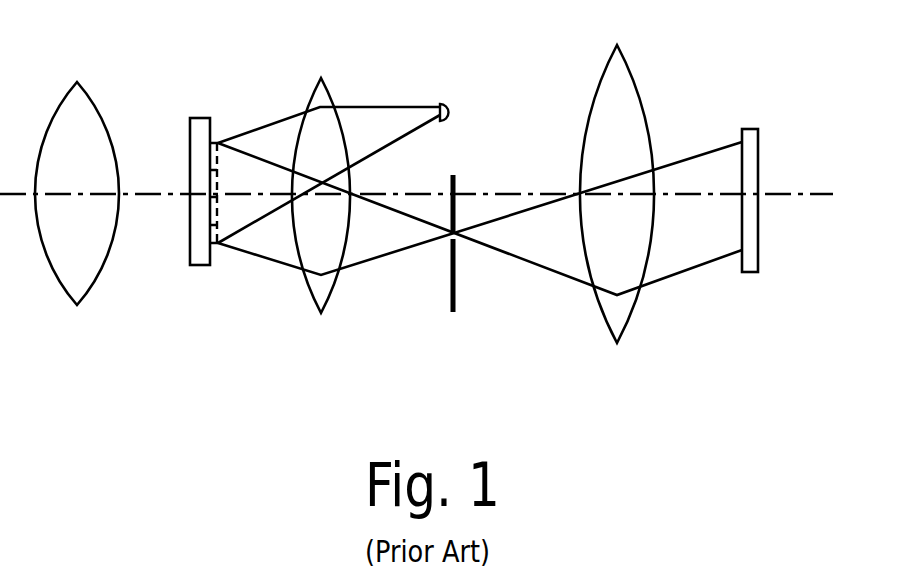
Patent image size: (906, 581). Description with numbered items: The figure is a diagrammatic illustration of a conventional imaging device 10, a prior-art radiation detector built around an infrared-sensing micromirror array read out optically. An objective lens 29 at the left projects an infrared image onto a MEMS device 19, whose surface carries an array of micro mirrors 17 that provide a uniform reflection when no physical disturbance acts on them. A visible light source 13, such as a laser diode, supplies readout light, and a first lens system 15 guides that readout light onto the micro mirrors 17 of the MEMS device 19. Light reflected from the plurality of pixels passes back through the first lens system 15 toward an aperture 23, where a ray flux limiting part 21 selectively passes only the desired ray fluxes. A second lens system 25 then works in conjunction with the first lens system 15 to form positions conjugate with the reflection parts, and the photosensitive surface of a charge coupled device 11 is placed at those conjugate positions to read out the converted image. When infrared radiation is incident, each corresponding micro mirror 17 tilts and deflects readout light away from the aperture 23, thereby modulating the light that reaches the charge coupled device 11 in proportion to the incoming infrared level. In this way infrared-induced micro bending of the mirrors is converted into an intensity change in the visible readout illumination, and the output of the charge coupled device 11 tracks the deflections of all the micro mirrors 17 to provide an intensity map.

The imaging device 10 is at (318, 382).
The charge coupled device 11 is at (747, 128).
The visible light source 13 is at (455, 122).
The first lens system 15 is at (322, 80).
The micro mirrors 17 is at (213, 252).
The MEMS device 19 is at (206, 118).
The ray flux limiting part 21 is at (455, 302).
The aperture 23 is at (450, 234).
The second lens system 25 is at (612, 55).
The objective lens 29 is at (102, 118).